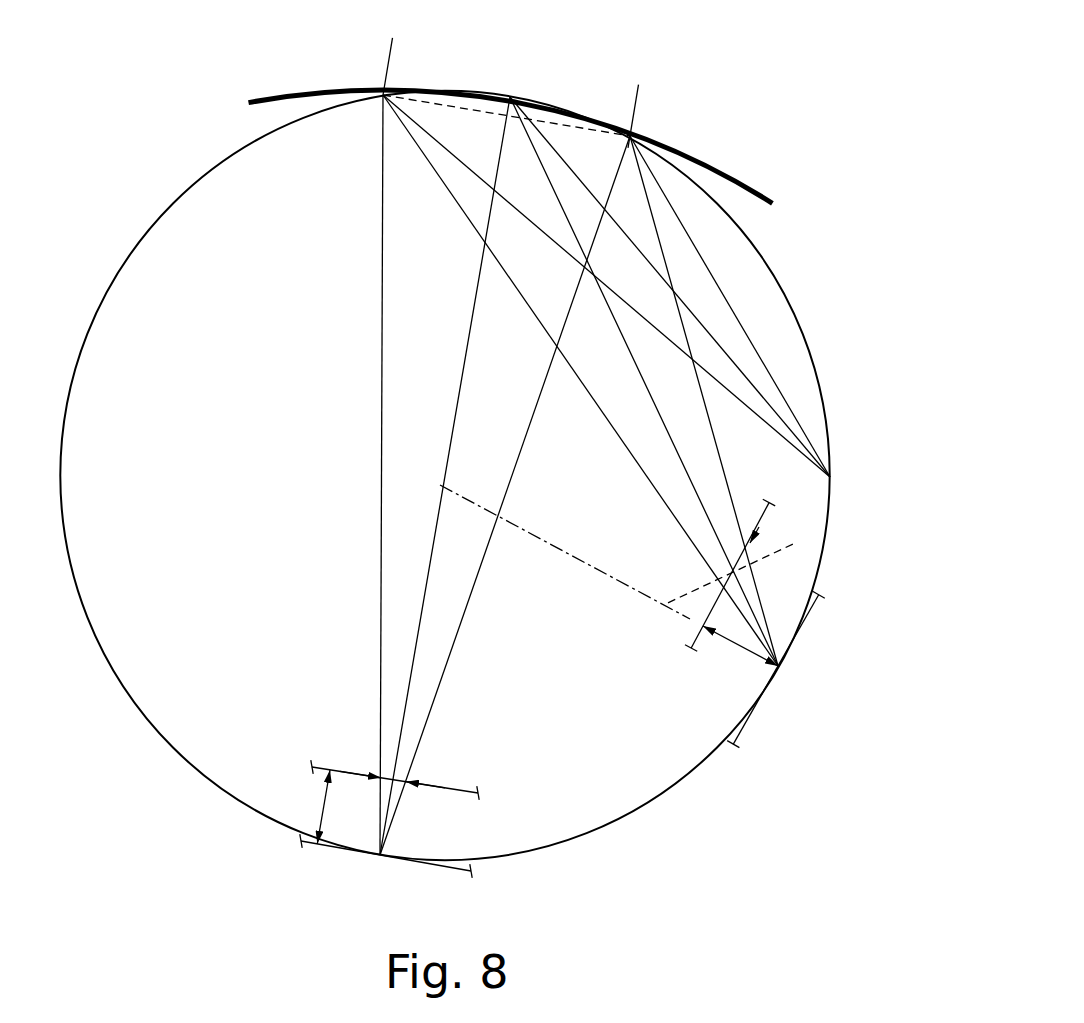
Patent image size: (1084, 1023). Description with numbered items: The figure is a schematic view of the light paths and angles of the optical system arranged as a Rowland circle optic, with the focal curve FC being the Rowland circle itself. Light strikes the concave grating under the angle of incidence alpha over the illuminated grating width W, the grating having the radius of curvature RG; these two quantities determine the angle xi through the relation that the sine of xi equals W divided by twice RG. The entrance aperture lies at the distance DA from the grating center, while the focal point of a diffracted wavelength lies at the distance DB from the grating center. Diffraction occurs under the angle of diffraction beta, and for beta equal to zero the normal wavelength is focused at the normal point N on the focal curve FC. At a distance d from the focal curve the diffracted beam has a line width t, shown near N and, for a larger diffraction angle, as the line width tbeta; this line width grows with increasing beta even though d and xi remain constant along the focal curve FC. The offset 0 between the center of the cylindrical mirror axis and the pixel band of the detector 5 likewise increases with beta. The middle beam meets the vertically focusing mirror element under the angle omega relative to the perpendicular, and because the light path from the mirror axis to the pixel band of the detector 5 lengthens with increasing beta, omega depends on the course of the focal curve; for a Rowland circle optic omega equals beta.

The detector 5 is at (777, 669).
The focal curve FC is at (836, 539).
The radius of curvature of the grating RG is at (270, 99).
The illuminated grating width W is at (637, 95).
The normal point N is at (499, 493).
The distance between the entrance aperture and the grating center DA is at (633, 234).
The distance between the focal point of the diffracted wavelength and the grating ce DB is at (670, 381).
The angle of incidence alpha is at (466, 351).
The angle of diffraction beta is at (588, 262).
The angle given by sin xi equals W over two RG xi is at (463, 617).
The angle of incidence of middle beam onto vertically focusing mirror element relati omega is at (765, 510).
The offset 0 is at (731, 575).
The distance from the focal curve d is at (541, 664).
The line width t is at (389, 808).
The line width as function of beta tbeta is at (733, 551).